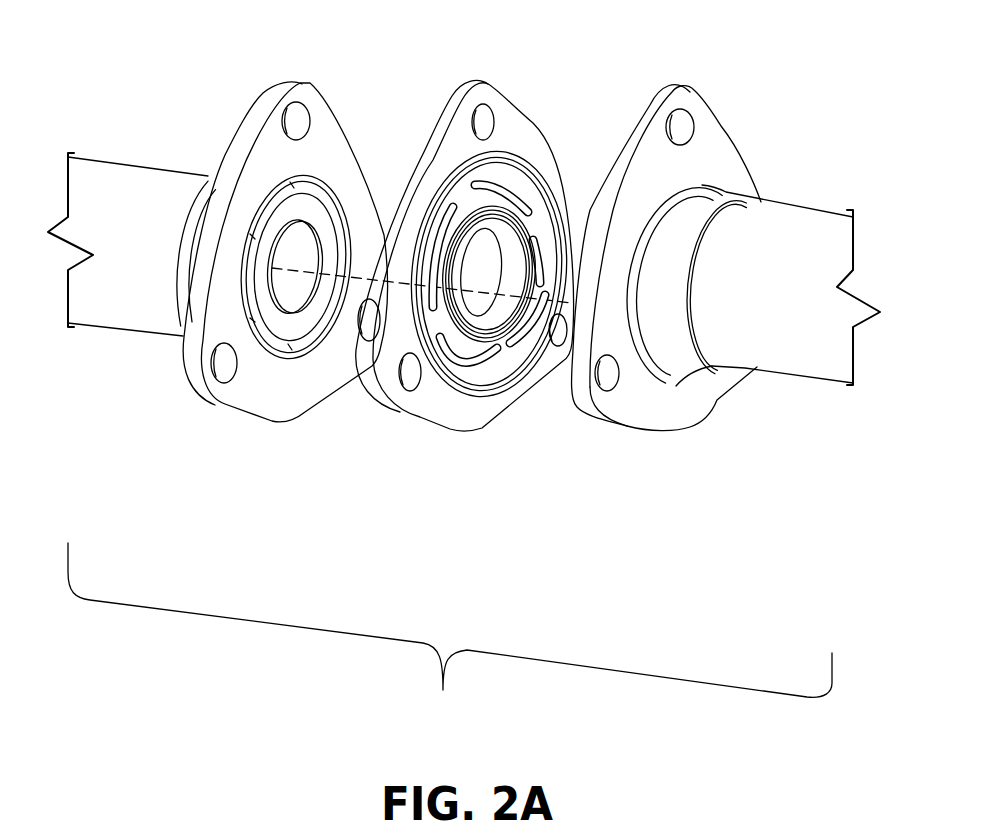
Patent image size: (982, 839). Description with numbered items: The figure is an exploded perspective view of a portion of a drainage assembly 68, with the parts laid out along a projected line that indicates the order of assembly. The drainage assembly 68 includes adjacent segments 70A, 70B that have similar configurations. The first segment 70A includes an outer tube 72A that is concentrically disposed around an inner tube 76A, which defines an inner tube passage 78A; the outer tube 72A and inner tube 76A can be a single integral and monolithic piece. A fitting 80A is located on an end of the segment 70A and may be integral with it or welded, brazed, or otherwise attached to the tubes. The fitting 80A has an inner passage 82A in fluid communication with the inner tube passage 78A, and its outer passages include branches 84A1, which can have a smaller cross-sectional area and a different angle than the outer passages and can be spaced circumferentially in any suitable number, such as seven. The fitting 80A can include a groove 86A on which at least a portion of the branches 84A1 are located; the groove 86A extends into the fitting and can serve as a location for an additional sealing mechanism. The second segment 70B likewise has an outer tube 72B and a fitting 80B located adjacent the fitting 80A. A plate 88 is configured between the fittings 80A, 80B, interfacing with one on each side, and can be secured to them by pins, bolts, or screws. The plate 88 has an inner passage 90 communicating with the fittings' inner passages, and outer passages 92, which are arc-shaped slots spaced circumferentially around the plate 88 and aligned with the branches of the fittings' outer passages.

The drainage assembly 68 is at (450, 635).
The segment 70A is at (110, 395).
The segment 70B is at (760, 432).
The outer tube 72A is at (147, 187).
The outer tube 72B is at (797, 230).
The inner tube 76A is at (303, 249).
The inner tube passage 78A is at (307, 248).
The fitting 80A is at (249, 132).
The fitting 80B is at (707, 138).
The inner passage 82A is at (322, 300).
The branches 84A1 is at (276, 238).
The groove 86A is at (257, 211).
The plate 88 is at (513, 143).
The inner passage 90 is at (487, 311).
The outer passages 92 is at (432, 308).